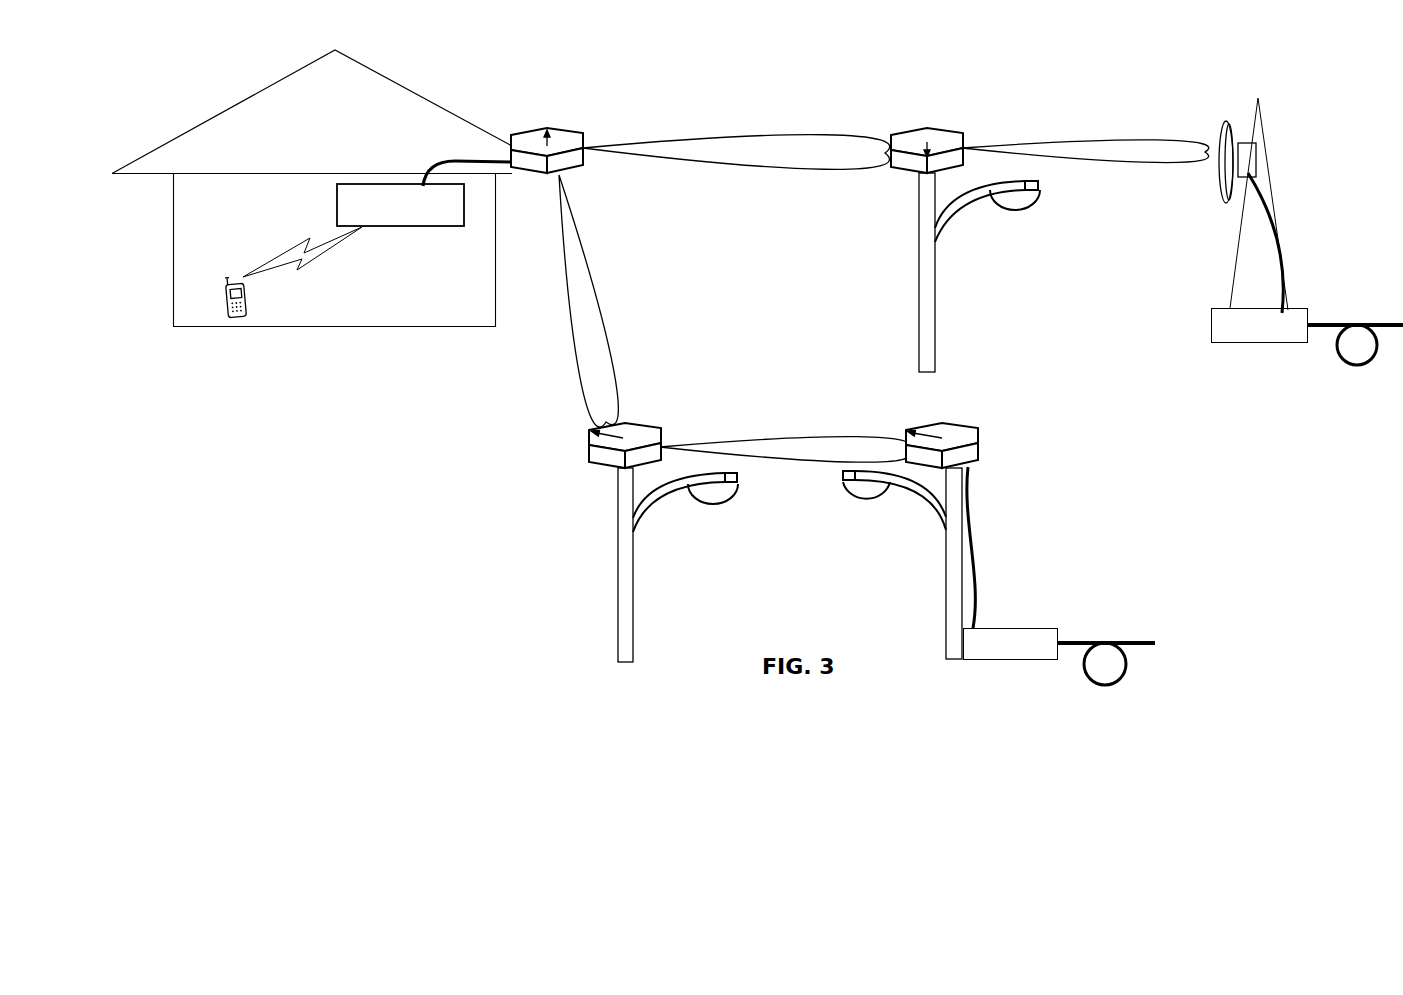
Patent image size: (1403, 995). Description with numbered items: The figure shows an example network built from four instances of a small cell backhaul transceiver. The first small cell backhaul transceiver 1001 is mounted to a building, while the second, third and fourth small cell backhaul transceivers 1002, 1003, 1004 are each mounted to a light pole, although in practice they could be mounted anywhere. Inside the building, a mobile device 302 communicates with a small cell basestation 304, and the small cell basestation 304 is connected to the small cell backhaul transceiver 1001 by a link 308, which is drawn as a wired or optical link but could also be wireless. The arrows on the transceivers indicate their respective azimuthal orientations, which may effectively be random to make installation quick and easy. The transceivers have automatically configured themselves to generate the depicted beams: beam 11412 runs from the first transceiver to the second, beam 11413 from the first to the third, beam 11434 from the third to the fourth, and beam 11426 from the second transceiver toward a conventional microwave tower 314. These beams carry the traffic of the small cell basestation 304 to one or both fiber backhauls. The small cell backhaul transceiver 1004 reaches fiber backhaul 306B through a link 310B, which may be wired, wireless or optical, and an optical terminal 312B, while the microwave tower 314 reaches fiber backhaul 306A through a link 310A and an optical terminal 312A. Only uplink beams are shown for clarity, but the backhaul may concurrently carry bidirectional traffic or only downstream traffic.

The small cell backhaul transceiver 1001 is at (524, 129).
The small cell backhaul transceiver 1002 is at (905, 128).
The small cell backhaul transceiver 1003 is at (585, 453).
The small cell backhaul transceiver 1004 is at (975, 417).
The beam 11412 is at (743, 137).
The beam 11413 is at (570, 320).
The beam 11426 is at (1090, 140).
The beam 11434 is at (798, 437).
The mobile device 302 is at (245, 305).
The small cell basestation 304 is at (337, 192).
The fiber backhaul 306A is at (1344, 363).
The fiber backhaul 306B is at (1100, 684).
The link 308 is at (448, 160).
The link 310A is at (1273, 217).
The link 310B is at (985, 520).
The optical terminal 312A is at (1230, 342).
The optical terminal 312B is at (993, 660).
The microwave tower 314 is at (1228, 120).